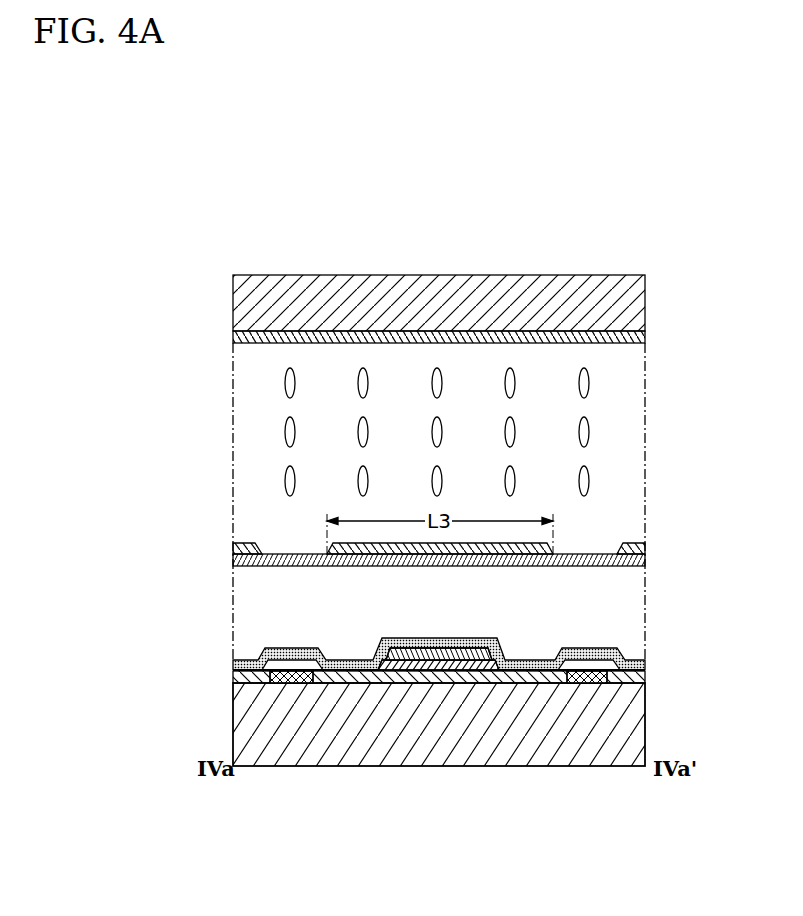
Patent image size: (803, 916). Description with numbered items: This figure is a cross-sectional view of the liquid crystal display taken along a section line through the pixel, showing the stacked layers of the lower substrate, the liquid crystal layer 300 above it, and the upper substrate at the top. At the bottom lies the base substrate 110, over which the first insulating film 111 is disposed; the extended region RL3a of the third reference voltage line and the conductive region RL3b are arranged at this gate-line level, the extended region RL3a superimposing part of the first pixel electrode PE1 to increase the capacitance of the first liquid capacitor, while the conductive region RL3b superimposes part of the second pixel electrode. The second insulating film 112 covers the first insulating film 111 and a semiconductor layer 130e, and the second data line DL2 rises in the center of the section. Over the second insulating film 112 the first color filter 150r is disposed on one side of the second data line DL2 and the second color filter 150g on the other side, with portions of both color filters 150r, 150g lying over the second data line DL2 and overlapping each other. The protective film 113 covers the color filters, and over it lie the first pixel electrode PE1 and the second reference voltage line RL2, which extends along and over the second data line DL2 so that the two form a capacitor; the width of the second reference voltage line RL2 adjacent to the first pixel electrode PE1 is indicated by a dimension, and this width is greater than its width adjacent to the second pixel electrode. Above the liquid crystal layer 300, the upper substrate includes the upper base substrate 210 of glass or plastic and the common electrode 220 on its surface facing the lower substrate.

The upper base substrate 210 is at (640, 305).
The common electrode 220 is at (640, 337).
The liquid crystal layer 300 is at (640, 445).
The second reference voltage line RL2 is at (537, 547).
The first pixel electrode PE1 is at (645, 549).
The protective film 113 is at (645, 562).
The base substrate 110 is at (257, 748).
The first insulating film 111 is at (526, 678).
The second insulating film 112 is at (502, 668).
The extended region RL3a is at (288, 684).
The conductive region RL3b is at (588, 684).
The first color filter 150r is at (340, 648).
The second color filter 150g is at (624, 650).
The second data line DL2 is at (392, 663).
The semiconductor layer 130e is at (430, 668).